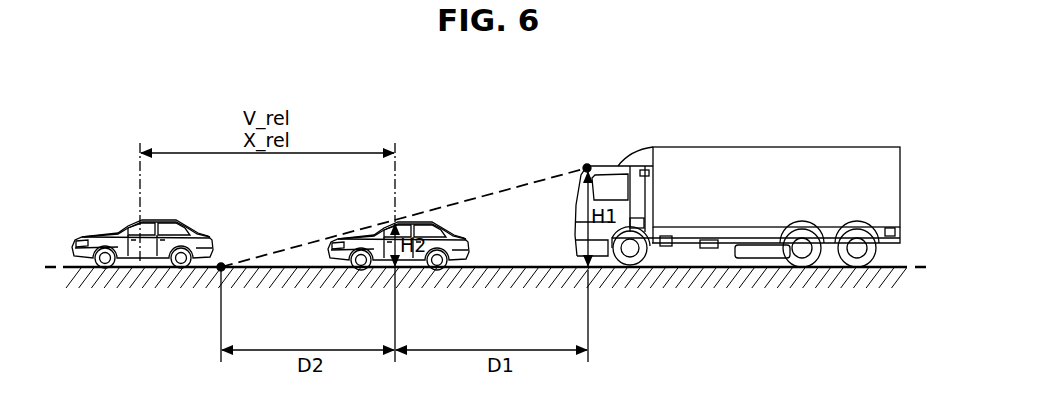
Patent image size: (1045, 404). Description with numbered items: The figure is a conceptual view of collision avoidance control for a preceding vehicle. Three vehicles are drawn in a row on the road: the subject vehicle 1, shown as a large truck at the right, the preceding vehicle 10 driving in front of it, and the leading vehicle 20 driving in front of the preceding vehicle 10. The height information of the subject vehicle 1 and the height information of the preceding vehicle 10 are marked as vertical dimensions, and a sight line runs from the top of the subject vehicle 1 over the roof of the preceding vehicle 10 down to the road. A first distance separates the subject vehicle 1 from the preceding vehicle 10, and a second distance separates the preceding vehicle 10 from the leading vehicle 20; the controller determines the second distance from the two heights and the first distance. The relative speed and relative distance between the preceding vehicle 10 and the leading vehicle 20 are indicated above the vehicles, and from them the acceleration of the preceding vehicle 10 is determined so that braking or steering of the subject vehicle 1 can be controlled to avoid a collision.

The vehicle 1 is at (736, 158).
The preceding vehicle 10 is at (423, 222).
The leading vehicle 20 is at (102, 238).